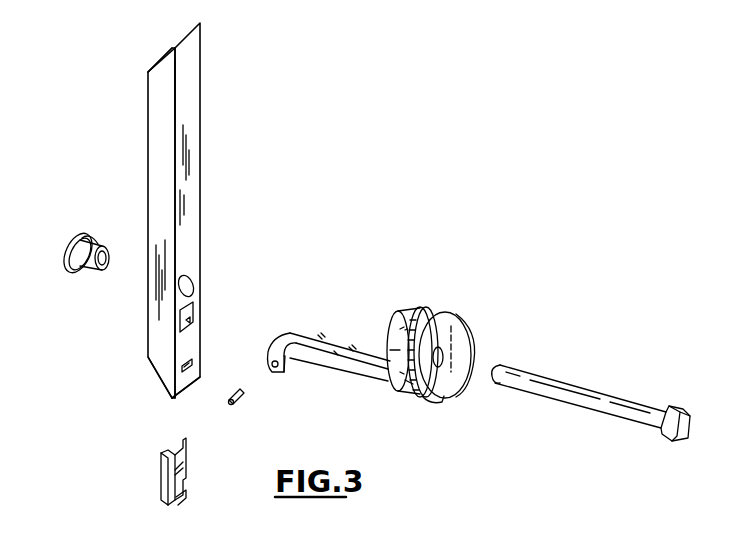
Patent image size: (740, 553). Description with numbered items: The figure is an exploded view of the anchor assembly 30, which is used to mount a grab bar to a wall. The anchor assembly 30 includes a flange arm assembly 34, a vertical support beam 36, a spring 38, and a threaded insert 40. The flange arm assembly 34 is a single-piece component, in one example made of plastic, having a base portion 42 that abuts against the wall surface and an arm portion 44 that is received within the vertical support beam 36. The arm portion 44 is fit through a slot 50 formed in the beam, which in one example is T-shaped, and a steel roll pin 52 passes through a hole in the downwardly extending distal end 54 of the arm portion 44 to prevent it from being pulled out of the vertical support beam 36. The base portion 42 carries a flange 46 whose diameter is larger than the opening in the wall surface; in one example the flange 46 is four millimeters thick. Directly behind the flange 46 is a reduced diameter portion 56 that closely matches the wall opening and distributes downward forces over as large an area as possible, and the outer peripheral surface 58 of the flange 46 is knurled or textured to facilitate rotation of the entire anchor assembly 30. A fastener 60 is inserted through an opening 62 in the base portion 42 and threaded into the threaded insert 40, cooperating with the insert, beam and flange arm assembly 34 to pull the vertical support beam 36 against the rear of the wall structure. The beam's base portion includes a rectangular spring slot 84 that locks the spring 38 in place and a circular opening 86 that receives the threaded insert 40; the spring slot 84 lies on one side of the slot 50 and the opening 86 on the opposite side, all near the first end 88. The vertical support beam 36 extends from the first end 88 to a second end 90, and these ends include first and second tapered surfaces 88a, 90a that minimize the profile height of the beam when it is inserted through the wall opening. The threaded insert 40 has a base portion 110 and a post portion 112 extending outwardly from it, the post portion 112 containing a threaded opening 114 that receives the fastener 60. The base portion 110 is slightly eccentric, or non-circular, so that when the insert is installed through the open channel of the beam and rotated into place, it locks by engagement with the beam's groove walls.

The anchor assembly 30 is at (402, 188).
The flange arm assembly 34 is at (436, 411).
The vertical support beam 36 is at (176, 100).
The spring 38 is at (163, 488).
The threaded insert 40 is at (84, 274).
The base portion 42 is at (428, 316).
The arm portion 44 is at (315, 342).
The flange 46 is at (424, 403).
The slot 50 is at (195, 314).
The steel roll pin 52 is at (232, 404).
The downwardly extending distal end 54 is at (285, 370).
The reduced diameter portion 56 is at (400, 344).
The outer peripheral surface 58 is at (404, 385).
The fastener 60 is at (572, 392).
The opening 62 is at (444, 355).
The spring slot 84 is at (192, 364).
The opening 86 is at (195, 287).
The first end 88 is at (176, 396).
The first tapered surface 88a is at (157, 378).
The second end 90 is at (183, 57).
The second tapered surface 90a is at (158, 62).
The base portion 110 is at (68, 272).
The post portion 112 is at (90, 238).
The threaded opening 114 is at (98, 272).